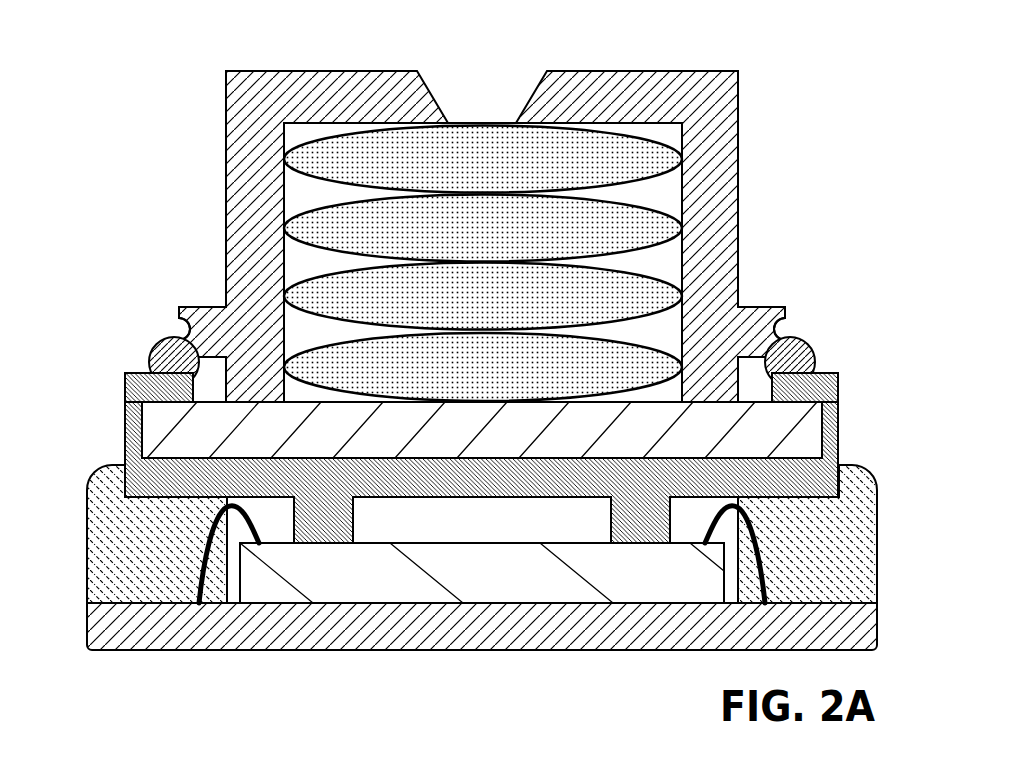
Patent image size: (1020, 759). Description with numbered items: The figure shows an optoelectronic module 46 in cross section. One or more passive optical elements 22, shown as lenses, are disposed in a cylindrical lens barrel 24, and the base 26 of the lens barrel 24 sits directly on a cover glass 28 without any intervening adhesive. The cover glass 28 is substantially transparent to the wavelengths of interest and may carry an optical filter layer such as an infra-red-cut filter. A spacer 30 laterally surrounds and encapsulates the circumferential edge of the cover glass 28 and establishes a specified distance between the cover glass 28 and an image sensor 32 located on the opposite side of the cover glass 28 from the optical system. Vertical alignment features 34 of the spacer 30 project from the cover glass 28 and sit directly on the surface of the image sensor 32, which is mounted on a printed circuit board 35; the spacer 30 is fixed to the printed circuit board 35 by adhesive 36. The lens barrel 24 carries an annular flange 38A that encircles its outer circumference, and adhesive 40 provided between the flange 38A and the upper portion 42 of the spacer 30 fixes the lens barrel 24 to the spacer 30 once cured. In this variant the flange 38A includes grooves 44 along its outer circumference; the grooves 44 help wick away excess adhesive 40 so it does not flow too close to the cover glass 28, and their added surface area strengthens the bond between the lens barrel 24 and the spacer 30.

The passive optical elements 22 is at (472, 217).
The lens barrel 24 is at (227, 160).
The base of the lens barrel 26 is at (710, 422).
The cover glass 28 is at (516, 445).
The spacer 30 is at (840, 432).
The image sensor 32 is at (438, 549).
The vertical alignment features 34 is at (358, 522).
The printed circuit board 35 is at (360, 650).
The adhesive 36 is at (93, 540).
The flange 38A is at (210, 307).
The adhesive 40 is at (155, 348).
The upper portion of the spacer 42 is at (125, 388).
The grooves 44 is at (178, 330).
The module 46 is at (475, 354).